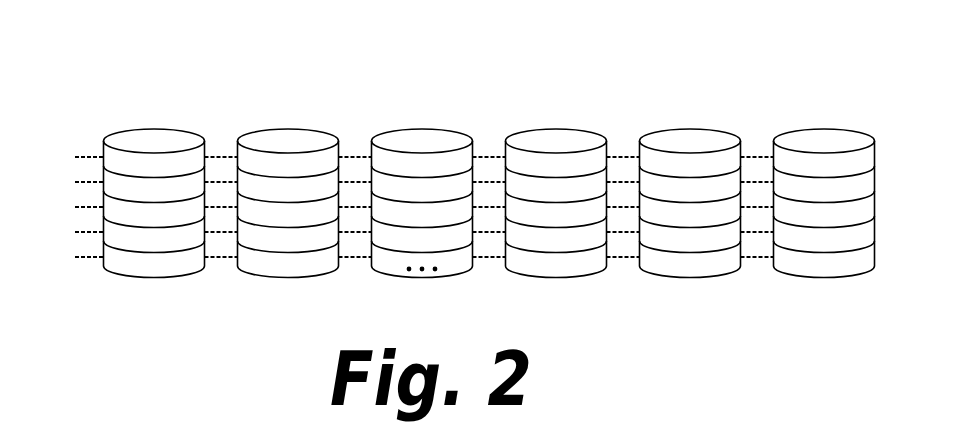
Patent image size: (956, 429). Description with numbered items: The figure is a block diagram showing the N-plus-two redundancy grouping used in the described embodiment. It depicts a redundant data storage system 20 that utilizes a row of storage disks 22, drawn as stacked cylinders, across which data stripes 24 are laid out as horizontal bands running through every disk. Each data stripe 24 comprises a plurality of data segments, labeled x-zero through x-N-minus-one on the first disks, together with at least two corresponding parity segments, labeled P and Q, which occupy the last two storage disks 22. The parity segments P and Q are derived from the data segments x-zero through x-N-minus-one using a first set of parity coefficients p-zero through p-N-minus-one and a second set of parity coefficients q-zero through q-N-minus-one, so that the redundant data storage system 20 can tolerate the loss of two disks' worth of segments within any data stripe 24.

The redundant data storage system 20 is at (461, 149).
The storage disks 22 is at (112, 122).
The data stripes 24 is at (410, 207).